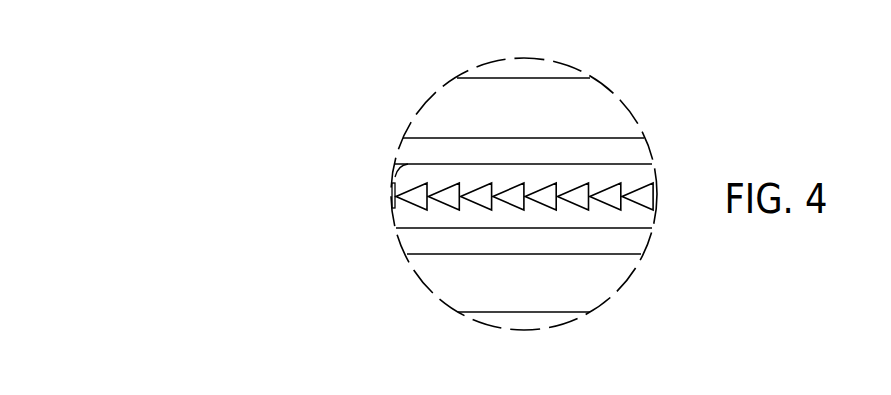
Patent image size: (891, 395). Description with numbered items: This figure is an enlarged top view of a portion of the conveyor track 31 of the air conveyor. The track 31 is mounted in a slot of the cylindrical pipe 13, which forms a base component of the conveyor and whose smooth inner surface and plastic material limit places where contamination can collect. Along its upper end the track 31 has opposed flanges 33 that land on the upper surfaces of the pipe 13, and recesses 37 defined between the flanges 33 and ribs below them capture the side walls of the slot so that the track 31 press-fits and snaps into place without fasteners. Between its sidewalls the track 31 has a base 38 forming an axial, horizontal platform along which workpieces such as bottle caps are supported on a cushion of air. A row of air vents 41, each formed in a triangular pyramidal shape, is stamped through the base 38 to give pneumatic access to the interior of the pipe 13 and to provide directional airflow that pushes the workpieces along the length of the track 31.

The pipe 13 is at (542, 312).
The conveyor track 31 is at (580, 155).
The flanges 33 is at (412, 243).
The recesses 37 is at (391, 180).
The base 38 is at (443, 220).
The air vents 41 is at (453, 190).